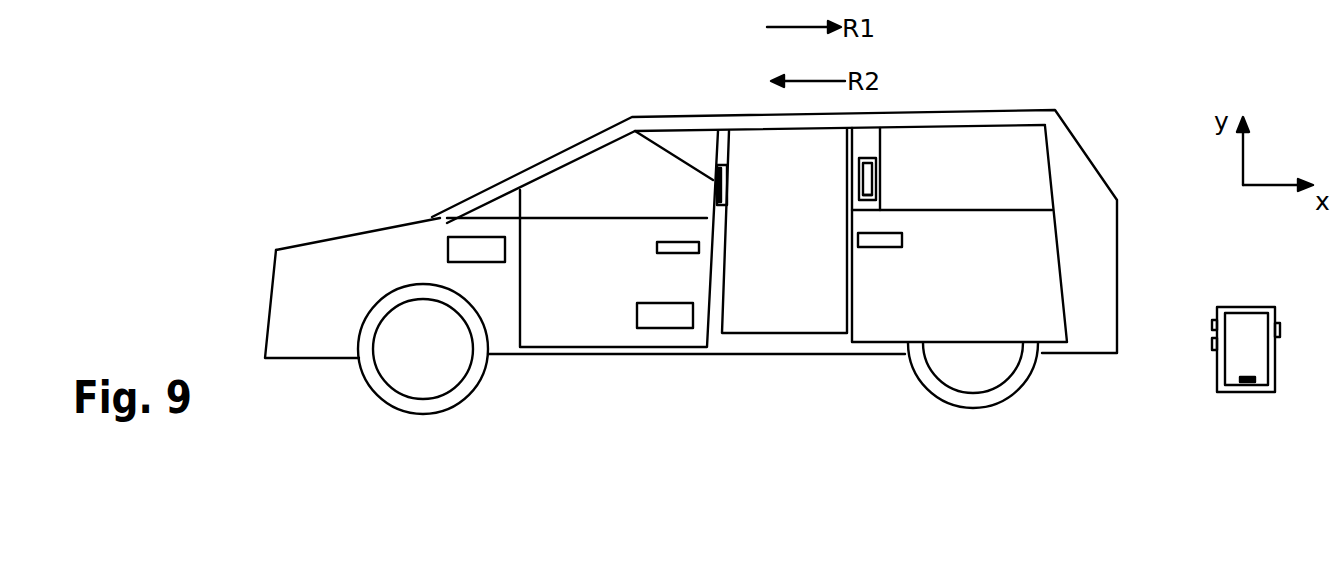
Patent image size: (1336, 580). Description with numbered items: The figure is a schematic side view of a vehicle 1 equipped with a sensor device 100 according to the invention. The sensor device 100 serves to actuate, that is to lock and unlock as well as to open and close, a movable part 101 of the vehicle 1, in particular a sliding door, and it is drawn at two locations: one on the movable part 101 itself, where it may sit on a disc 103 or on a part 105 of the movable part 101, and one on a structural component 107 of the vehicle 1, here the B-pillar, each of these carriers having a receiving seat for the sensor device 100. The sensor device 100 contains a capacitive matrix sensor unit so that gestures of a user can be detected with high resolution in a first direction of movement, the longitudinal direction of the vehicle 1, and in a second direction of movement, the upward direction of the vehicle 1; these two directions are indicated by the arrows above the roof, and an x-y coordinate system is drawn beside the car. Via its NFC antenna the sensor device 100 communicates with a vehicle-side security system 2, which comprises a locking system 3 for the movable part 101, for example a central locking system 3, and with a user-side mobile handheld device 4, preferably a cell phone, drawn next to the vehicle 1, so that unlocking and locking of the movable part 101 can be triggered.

The vehicle 1 is at (387, 230).
The vehicle-side security system 2 is at (480, 248).
The locking system 3 is at (660, 317).
The mobile handheld device 4 is at (1252, 357).
The sensor device 100 is at (633, 147).
The movable part 101 is at (1043, 263).
The disc 103 is at (1002, 173).
The part of the movable part 105 is at (878, 192).
The structural component 107 is at (718, 160).